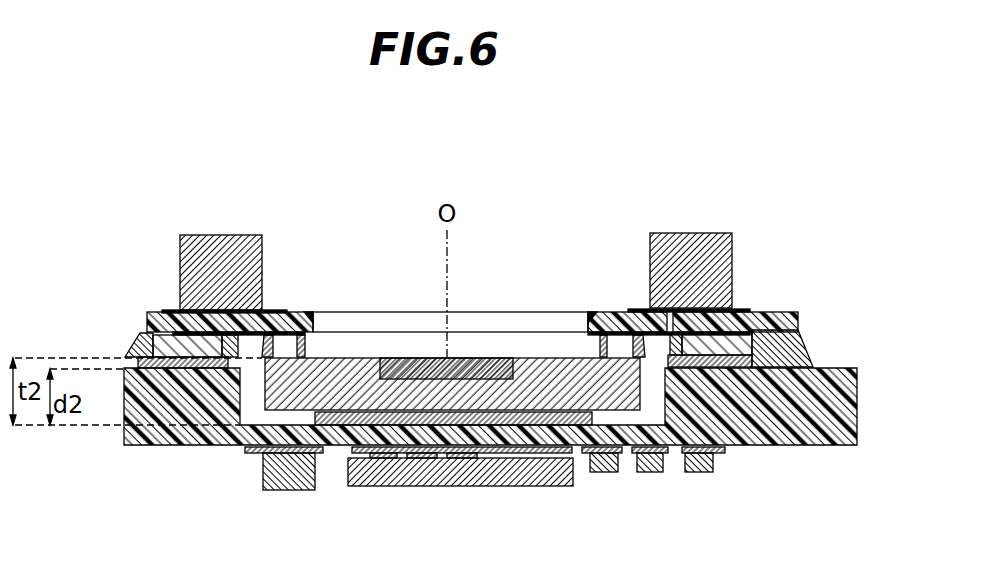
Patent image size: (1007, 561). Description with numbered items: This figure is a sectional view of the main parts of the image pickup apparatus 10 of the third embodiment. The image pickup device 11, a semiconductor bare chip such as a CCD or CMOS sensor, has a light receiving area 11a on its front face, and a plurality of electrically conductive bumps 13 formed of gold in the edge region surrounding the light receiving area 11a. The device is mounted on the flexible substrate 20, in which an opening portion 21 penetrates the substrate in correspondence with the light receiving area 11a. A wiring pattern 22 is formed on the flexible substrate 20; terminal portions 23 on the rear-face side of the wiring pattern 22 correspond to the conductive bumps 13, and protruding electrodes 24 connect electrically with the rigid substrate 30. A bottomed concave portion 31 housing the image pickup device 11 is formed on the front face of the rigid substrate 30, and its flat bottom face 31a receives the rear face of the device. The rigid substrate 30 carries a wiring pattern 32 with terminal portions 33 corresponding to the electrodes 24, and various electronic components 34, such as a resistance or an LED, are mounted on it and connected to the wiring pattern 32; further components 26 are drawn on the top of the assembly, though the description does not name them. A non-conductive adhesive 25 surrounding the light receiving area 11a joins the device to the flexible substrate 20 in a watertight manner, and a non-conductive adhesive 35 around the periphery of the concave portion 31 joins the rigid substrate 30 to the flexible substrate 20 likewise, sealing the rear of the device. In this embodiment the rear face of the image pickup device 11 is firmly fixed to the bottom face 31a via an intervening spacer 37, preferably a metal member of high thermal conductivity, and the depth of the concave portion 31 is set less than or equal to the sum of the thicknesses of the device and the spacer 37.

The image pickup apparatus 10 is at (509, 206).
The image pickup device 11 is at (390, 347).
The light receiving area 11a is at (477, 357).
The electrically conductive bumps 13 is at (291, 311).
The flexible substrate 20 is at (312, 303).
The opening portion 21 is at (584, 336).
The wiring pattern 22 is at (272, 302).
The terminal portions 23 is at (312, 347).
The electrodes 24 is at (160, 349).
The non-conductive adhesive 25 is at (317, 323).
The electronic component 26 is at (215, 235).
The rigid substrate 30 is at (147, 458).
The concave portion 31 is at (656, 405).
The bottom face 31a is at (568, 425).
The wiring pattern 32 is at (327, 456).
The terminal portions 33 is at (235, 345).
The electronic components 34 is at (288, 480).
The non-conductive adhesive 35 is at (140, 336).
The spacer 37 is at (512, 478).